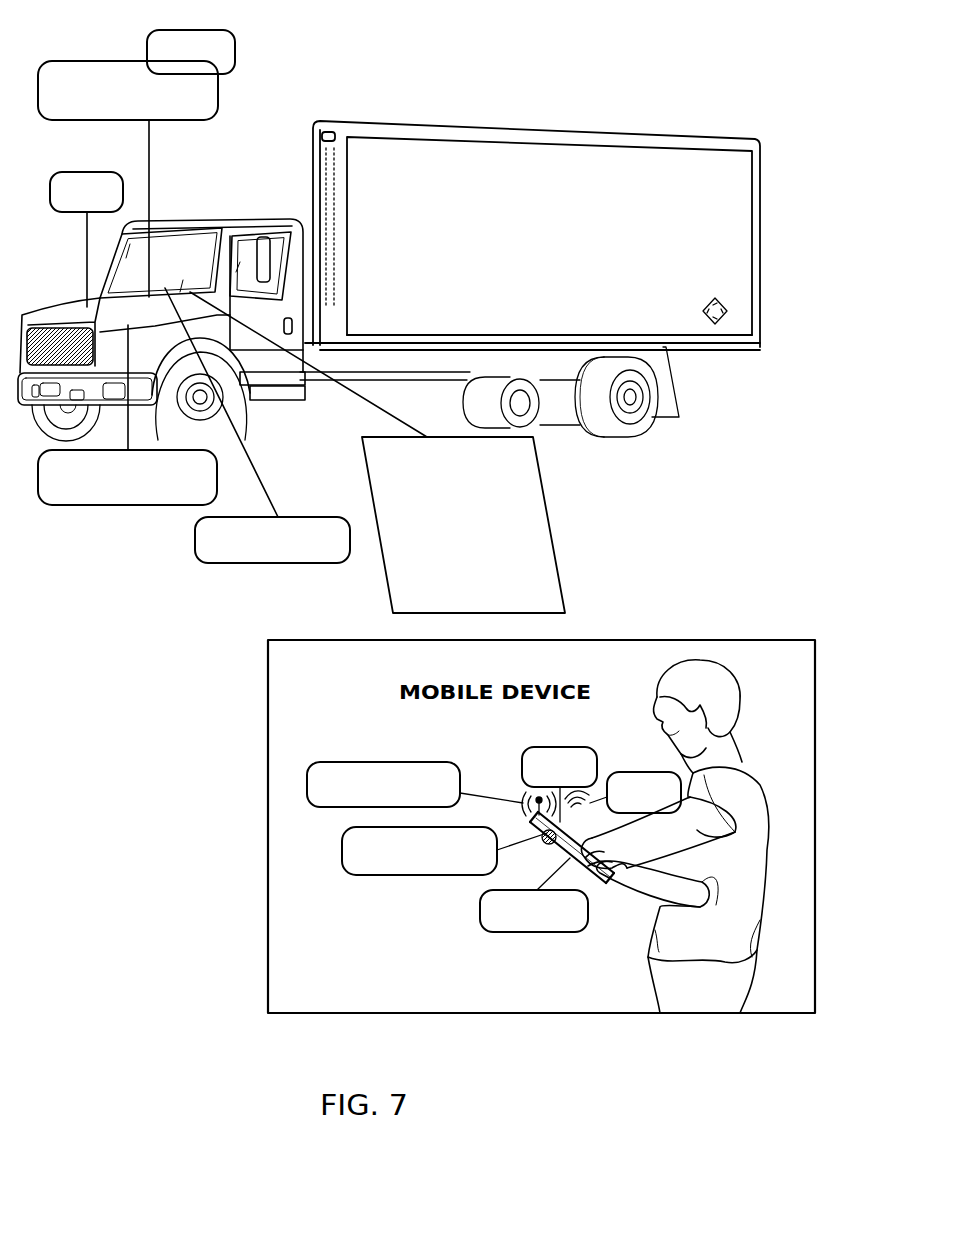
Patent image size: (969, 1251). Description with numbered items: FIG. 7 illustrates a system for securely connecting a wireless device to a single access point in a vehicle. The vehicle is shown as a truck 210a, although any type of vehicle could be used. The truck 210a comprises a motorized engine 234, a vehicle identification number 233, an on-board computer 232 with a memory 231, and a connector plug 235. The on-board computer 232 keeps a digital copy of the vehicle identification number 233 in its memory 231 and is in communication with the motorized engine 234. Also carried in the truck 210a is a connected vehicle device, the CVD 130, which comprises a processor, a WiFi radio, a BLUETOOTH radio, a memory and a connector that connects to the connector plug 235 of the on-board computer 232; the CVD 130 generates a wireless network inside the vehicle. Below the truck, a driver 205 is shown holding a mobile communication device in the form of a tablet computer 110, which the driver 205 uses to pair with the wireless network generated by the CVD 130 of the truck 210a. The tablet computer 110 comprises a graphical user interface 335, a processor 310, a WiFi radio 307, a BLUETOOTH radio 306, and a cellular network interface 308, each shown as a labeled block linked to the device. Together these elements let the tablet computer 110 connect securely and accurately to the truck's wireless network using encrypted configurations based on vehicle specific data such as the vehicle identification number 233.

The truck 210a is at (710, 129).
The memory 231 is at (213, 28).
The on-board computer 232 is at (60, 61).
The vehicle identification number 233 is at (70, 172).
The motorized engine 234 is at (77, 505).
The connector plug 235 is at (250, 563).
The connected vehicle device 130 is at (548, 488).
The cellular network interface 308 is at (352, 762).
The graphical user interface 335 is at (545, 747).
The WiFi radio 307 is at (617, 772).
The BLUETOOTH radio 306 is at (380, 875).
The processor 310 is at (513, 932).
The tablet computer 110 is at (568, 848).
The driver 205 is at (753, 758).